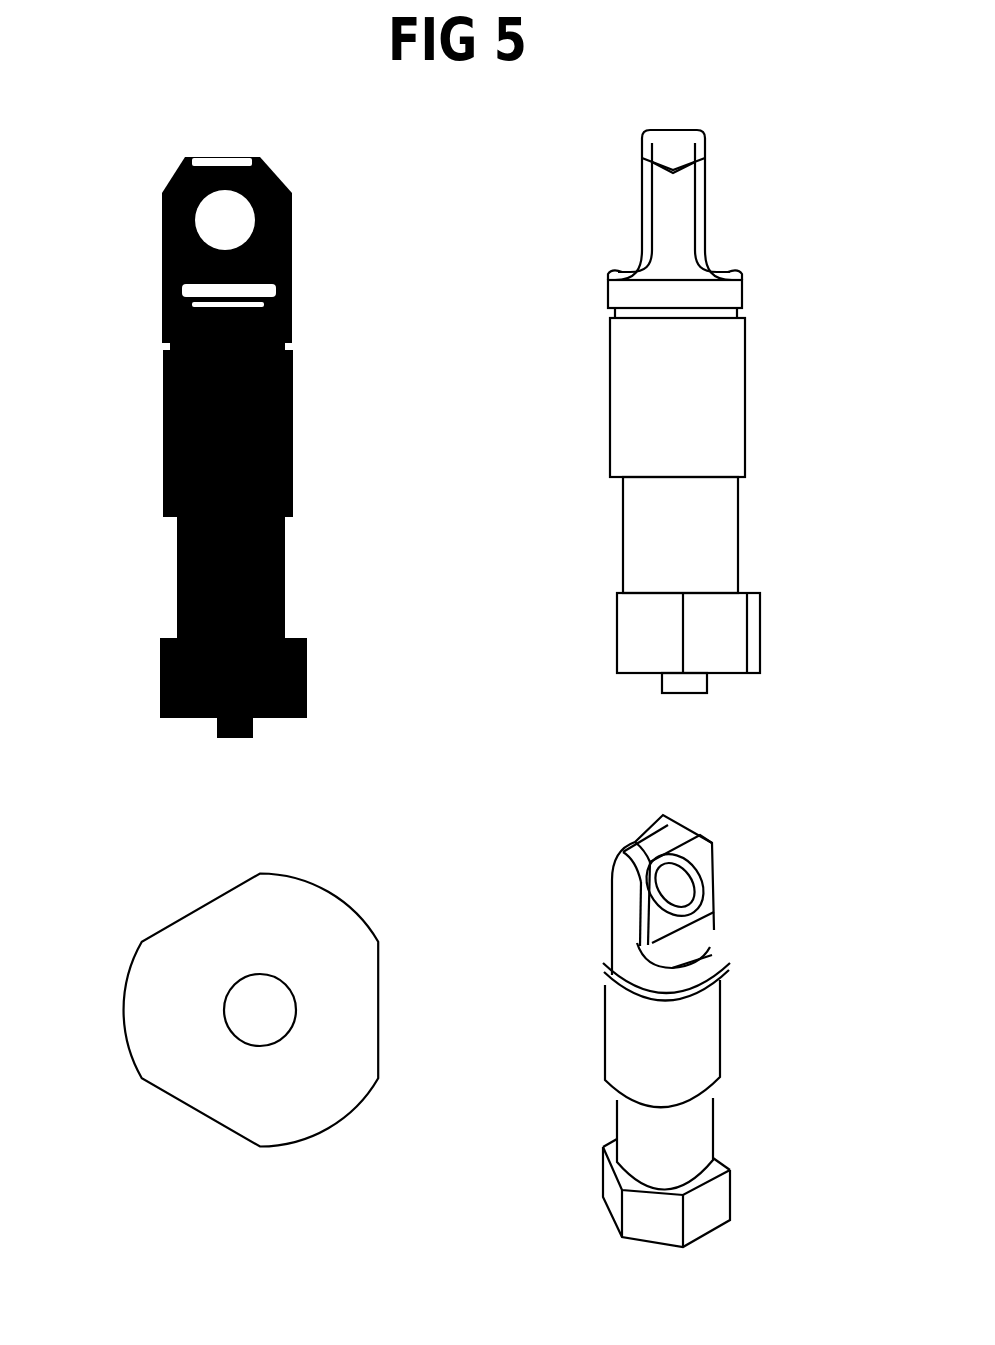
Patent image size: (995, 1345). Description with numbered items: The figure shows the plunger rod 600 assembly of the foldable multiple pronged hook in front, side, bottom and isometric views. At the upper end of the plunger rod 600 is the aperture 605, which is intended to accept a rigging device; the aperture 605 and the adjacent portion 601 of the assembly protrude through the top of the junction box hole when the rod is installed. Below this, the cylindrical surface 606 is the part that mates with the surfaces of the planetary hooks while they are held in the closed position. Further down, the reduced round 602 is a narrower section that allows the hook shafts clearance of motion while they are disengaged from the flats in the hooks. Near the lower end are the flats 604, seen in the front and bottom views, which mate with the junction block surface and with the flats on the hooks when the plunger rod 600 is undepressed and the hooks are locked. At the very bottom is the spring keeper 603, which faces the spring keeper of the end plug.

The plunger rod 600 is at (444, 677).
The plunger rod portion 601 is at (300, 344).
The reduced round 602 is at (298, 593).
The spring keeper 603 is at (270, 727).
The flats 604 is at (148, 688).
The aperture 605 is at (250, 222).
The surface 606 is at (150, 418).